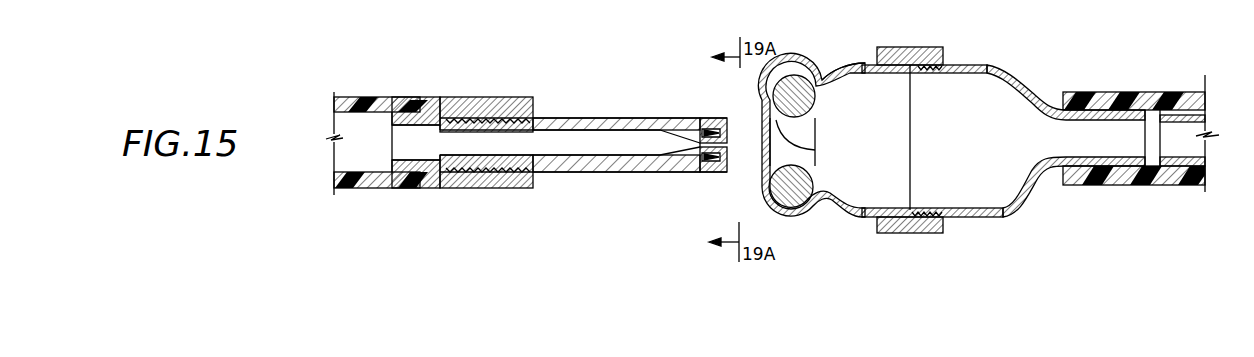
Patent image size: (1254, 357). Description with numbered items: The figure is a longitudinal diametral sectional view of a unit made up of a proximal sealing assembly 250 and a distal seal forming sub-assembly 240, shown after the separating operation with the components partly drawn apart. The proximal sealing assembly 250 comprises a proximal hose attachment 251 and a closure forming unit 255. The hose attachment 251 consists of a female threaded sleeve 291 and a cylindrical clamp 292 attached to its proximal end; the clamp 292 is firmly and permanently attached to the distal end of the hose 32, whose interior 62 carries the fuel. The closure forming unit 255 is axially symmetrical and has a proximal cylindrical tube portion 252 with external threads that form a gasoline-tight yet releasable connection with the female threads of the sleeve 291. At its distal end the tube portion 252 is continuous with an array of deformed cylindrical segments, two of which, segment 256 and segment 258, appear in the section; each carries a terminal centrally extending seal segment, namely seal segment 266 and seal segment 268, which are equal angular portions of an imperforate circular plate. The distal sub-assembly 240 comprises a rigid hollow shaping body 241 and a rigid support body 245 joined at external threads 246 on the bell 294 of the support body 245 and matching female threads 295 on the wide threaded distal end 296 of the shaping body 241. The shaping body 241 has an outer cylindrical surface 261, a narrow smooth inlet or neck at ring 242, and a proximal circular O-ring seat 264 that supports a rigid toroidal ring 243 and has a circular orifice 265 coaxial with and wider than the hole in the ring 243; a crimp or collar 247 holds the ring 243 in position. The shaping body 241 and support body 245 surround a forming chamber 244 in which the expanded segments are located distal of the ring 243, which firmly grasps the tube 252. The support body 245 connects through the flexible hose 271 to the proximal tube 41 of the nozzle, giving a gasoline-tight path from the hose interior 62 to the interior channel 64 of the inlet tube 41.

The hose 32 is at (350, 100).
The interior of the hose 62 is at (392, 153).
The cylindrical clamp 292 is at (398, 100).
The female threaded sleeve 291 is at (492, 98).
The proximal hose attachment 251 is at (461, 185).
The proximal cylindrical tube portion 252 is at (619, 173).
The deformed cylindrical segment 256 is at (720, 118).
The deformed cylindrical segment 258 is at (720, 173).
The terminal seal segment 266 is at (729, 120).
The terminal seal segment 268 is at (729, 175).
The closure forming unit 255 is at (728, 220).
The proximal sealing assembly 250 is at (715, 260).
The outer cylindrical surface 261 is at (866, 65).
The O-ring seat 264 is at (763, 212).
The crimp or collar 247 is at (817, 88).
The rigid toroidal ring 243 is at (812, 183).
The ring 242 is at (815, 148).
The circular orifice 265 is at (816, 120).
The shaping body 241 is at (848, 230).
The forming chamber 244 is at (971, 153).
The external proximal threads 246 is at (915, 68).
The female threads 295 is at (928, 66).
The threaded cylindrical distal end 296 is at (914, 222).
The bell 294 is at (985, 68).
The support body 245 is at (1027, 212).
The flexible hose 271 is at (1191, 100).
The interior channel 64 is at (1191, 151).
The proximal tube 41 is at (1200, 163).
The distal seal forming sub-assembly 240 is at (1178, 265).